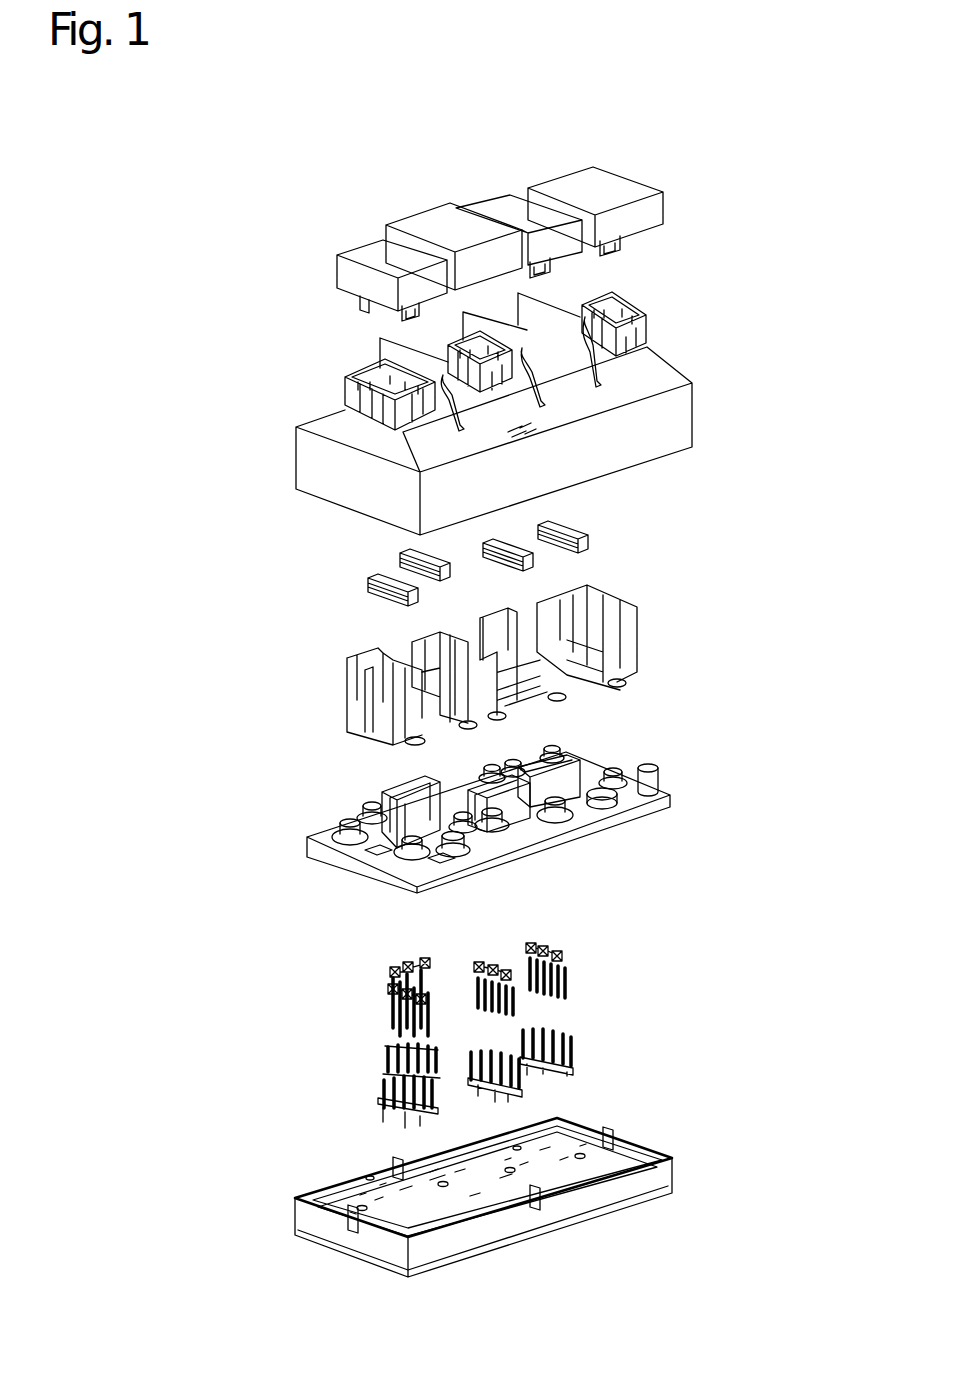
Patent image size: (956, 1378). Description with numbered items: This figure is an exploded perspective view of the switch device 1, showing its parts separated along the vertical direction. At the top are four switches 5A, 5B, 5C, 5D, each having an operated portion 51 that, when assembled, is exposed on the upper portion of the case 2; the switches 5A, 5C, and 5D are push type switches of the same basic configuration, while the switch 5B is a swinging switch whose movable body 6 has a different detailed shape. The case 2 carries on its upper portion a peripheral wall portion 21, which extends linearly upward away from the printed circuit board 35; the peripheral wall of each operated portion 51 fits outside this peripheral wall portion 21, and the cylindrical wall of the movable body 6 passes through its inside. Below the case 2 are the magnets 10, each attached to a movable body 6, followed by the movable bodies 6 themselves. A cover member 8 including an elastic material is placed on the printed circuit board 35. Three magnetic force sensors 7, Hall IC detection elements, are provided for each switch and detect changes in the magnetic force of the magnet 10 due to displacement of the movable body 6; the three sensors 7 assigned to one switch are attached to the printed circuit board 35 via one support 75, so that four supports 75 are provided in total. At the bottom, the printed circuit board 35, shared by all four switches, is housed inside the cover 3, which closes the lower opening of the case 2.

The switch device 1 is at (131, 329).
The case 2 is at (293, 488).
The peripheral wall portion 21 is at (345, 393).
The cover 3 is at (286, 1201).
The printed circuit board 35 is at (340, 1208).
The switch 5A is at (341, 239).
The switch 5B is at (394, 210).
The switch 5C is at (469, 190).
The switch 5D is at (541, 171).
The operated portion 51 is at (360, 256).
The movable body 6 is at (343, 653).
The magnetic force sensor 7 is at (427, 957).
The support 75 is at (385, 1062).
The cover member 8 is at (305, 836).
The magnet 10 is at (400, 558).